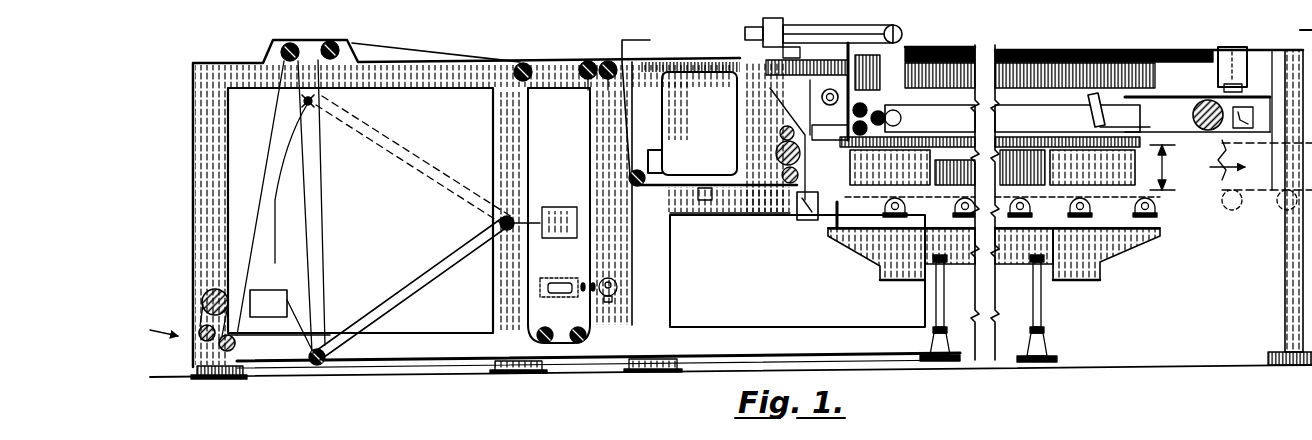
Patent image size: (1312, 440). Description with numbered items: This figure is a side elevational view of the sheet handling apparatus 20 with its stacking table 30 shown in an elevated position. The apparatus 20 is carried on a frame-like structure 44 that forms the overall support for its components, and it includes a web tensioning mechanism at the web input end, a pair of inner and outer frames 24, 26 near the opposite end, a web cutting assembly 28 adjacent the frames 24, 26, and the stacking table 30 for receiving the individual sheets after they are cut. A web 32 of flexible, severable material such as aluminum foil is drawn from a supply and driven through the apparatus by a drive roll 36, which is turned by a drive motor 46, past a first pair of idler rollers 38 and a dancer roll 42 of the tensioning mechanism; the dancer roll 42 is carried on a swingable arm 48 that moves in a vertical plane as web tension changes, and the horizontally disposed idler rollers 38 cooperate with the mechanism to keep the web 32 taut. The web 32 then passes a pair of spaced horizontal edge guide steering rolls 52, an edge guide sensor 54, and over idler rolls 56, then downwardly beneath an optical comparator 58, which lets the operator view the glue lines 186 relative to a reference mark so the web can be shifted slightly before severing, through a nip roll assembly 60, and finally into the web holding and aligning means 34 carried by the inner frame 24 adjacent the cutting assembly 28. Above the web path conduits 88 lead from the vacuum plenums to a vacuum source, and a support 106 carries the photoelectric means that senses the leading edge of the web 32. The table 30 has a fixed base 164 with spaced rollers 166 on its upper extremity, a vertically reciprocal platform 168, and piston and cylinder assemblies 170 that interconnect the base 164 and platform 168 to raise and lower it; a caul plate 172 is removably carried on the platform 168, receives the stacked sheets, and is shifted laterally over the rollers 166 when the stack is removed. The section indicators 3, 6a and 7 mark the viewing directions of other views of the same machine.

The section line 3- 3 is at (1010, 208).
The view direction 6a is at (1128, 27).
The view direction 7 is at (626, 95).
The sheet handling apparatus 20 is at (666, 43).
The inner frame 24 is at (732, 64).
The outer frame 26 is at (610, 51).
The web cutting assembly 28 is at (822, 113).
The stacking table 30 is at (847, 248).
The web 32 is at (396, 51).
The web holding and aligning means 34 is at (1170, 130).
The drive roll 36 is at (203, 297).
The first pair of idler rollers 38 is at (222, 349).
The dancer roll 42 is at (318, 366).
The frame-like structure 44 is at (182, 215).
The drive motor 46 is at (265, 291).
The swingable arm 48 is at (398, 297).
The edge guide steering rolls 52 is at (547, 327).
The edge guide sensor 54 is at (593, 271).
The idler rolls 56 is at (607, 81).
The optical comparator 58 is at (717, 142).
The nip roll assembly 60 is at (776, 140).
The conduits 88 is at (898, 47).
The support 106 is at (1080, 112).
The fixed base 164 is at (1094, 287).
The rollers 166 is at (889, 206).
The platform 168 is at (912, 167).
The piston and cylinder assemblies 170 is at (935, 308).
The caul plate 172 is at (1067, 167).
The glue lines 186 is at (915, 110).